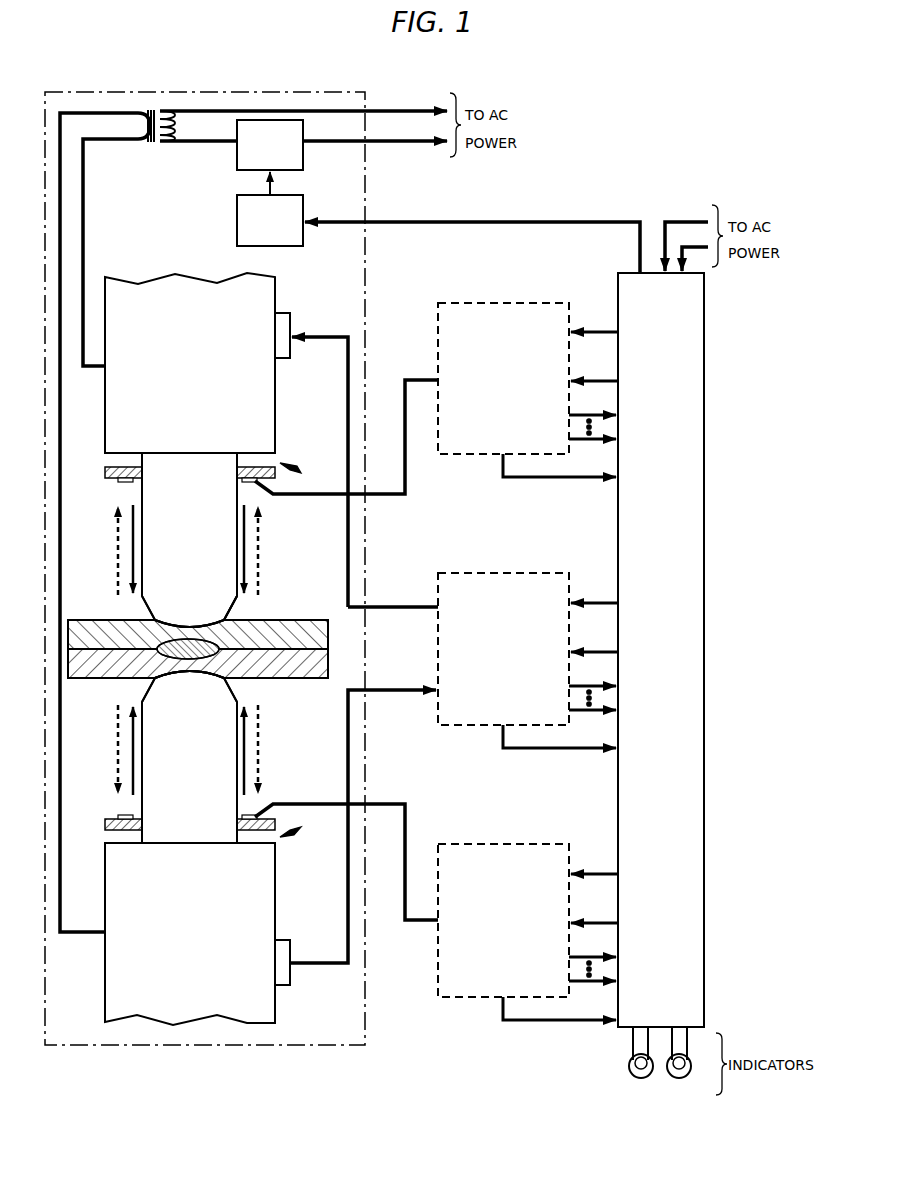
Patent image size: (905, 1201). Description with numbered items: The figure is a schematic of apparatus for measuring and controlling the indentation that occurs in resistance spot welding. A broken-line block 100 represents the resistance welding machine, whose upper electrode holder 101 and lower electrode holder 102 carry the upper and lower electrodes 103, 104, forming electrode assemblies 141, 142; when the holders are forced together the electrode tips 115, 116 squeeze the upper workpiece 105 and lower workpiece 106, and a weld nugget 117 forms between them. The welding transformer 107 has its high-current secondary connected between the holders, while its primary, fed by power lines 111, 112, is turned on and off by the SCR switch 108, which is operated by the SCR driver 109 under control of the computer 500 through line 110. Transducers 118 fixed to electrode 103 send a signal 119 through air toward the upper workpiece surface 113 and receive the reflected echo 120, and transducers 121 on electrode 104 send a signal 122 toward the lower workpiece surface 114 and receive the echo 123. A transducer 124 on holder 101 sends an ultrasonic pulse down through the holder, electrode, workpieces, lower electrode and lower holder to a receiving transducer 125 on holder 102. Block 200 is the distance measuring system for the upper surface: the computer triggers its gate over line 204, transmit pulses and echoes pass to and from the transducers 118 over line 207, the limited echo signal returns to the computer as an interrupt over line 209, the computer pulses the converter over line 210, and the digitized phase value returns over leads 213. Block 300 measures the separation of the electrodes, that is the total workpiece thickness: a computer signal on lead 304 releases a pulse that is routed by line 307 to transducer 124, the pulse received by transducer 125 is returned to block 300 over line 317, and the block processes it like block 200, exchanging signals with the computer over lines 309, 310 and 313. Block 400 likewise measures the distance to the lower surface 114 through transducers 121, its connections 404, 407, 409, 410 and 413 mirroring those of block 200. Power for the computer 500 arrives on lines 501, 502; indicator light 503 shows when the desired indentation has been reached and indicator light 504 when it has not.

The resistance welding machine 100 is at (266, 92).
The upper electrode holder 101 is at (107, 441).
The lower electrode holder 102 is at (105, 986).
The upper electrode 103 is at (189, 540).
The lower electrode 104 is at (189, 757).
The upper workpiece 105 is at (326, 638).
The lower workpiece 106 is at (326, 670).
The welding transformer 107 is at (150, 147).
The switch 108 is at (303, 160).
The SCR driver 109 is at (303, 238).
The line 110 is at (444, 222).
The line 111 is at (388, 111).
The line 112 is at (386, 141).
The upper workpiece surface 113 is at (118, 618).
The lower workpiece surface 114 is at (118, 680).
The tip 115 is at (236, 618).
The tip 116 is at (188, 657).
The nugget 117 is at (190, 640).
The transducers 118 is at (122, 483).
The signal 119 is at (133, 550).
The echo 120 is at (118, 575).
The transducers 121 is at (122, 815).
The signal 122 is at (133, 752).
The echo 123 is at (118, 728).
The transducer 124 is at (284, 358).
The transducer 125 is at (283, 985).
The electrode assembly 141 is at (309, 472).
The electrode assembly 142 is at (309, 827).
The distance measuring system 200 is at (480, 303).
The line 204 is at (604, 332).
The line 207 is at (405, 480).
The line 209 is at (548, 478).
The line 210 is at (604, 381).
The leads 213 is at (620, 408).
The distance measuring system 300 is at (480, 573).
The lead 304 is at (604, 603).
The line 307 is at (389, 607).
The output line to computer 309 is at (548, 749).
The control line from computer 310 is at (604, 652).
The data lines to computer 313 is at (620, 679).
The sensing line from lower contact 317 is at (390, 692).
The distance measuring system 400 is at (480, 844).
The control line from computer 404 is at (604, 874).
The sensing line from lower electrode ring 407 is at (405, 816).
The output line to computer 409 is at (548, 1021).
The control line from computer 410 is at (604, 923).
The data lines to computer 413 is at (620, 950).
The computer 500 is at (704, 336).
The line 501 is at (683, 222).
The line 502 is at (697, 249).
The indicator light 503 is at (641, 1078).
The indicator light 504 is at (679, 1078).